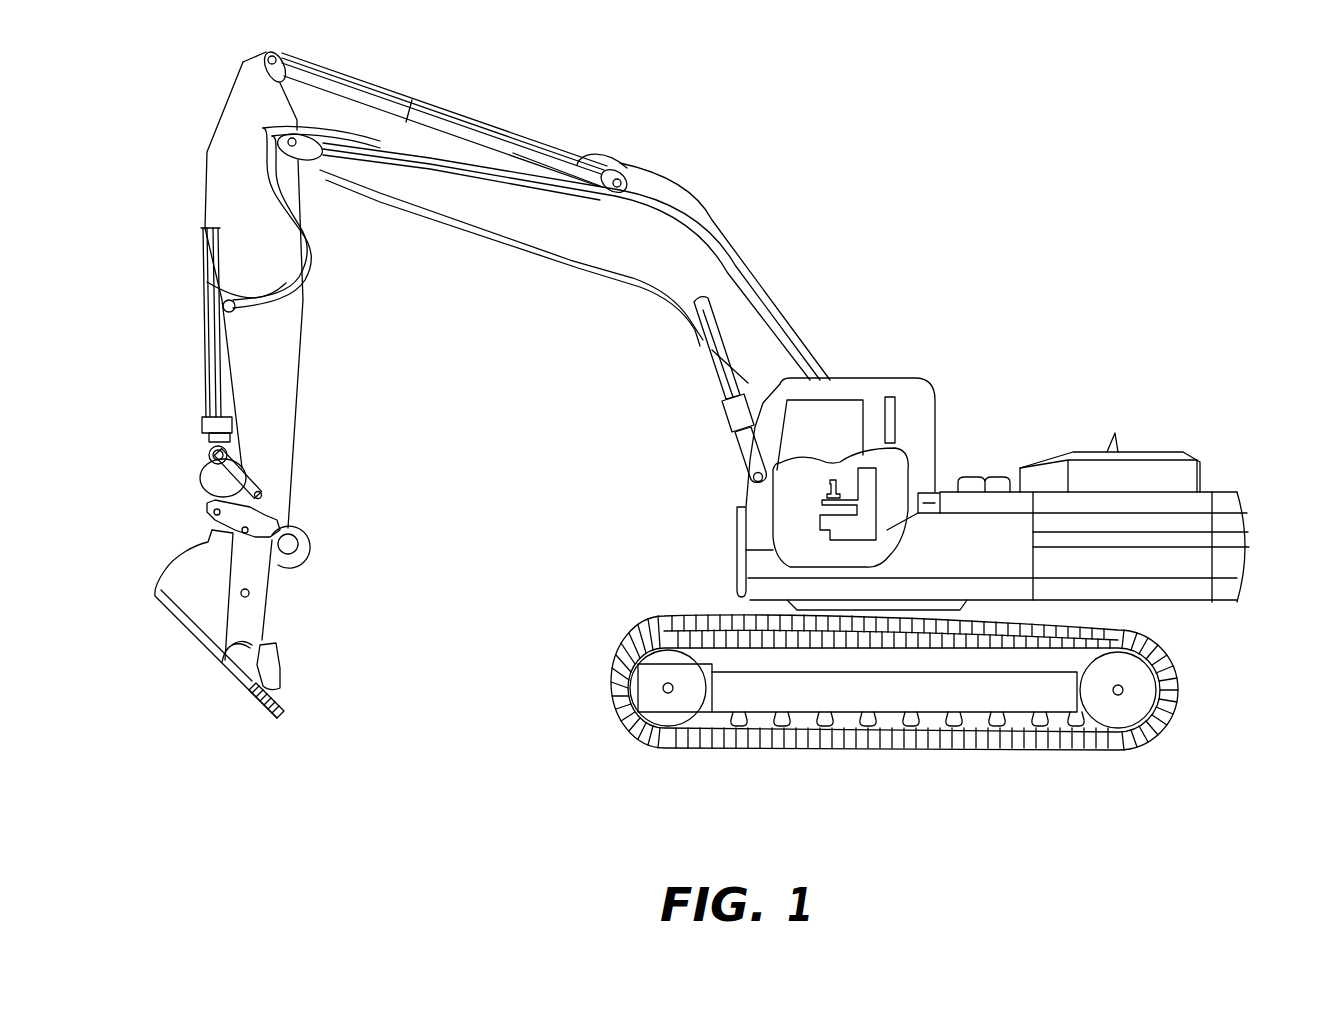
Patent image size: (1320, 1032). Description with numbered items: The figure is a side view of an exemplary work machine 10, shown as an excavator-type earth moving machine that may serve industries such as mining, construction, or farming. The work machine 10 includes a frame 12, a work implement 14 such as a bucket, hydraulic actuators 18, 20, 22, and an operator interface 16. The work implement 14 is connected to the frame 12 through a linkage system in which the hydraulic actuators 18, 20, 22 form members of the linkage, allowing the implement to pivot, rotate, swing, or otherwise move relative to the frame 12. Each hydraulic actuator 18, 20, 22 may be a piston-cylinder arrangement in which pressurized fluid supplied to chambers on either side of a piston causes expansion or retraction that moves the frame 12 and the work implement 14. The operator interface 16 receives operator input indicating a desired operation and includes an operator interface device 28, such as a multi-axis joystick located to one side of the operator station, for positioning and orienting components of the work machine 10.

The work machine 10 is at (897, 231).
The frame 12 is at (410, 195).
The work implement 14 is at (277, 620).
The operator interface 16 is at (850, 444).
The hydraulic actuator 18 is at (713, 368).
The hydraulic actuator 20 is at (430, 122).
The hydraulic actuator 22 is at (217, 347).
The operator interface device 28 is at (830, 477).